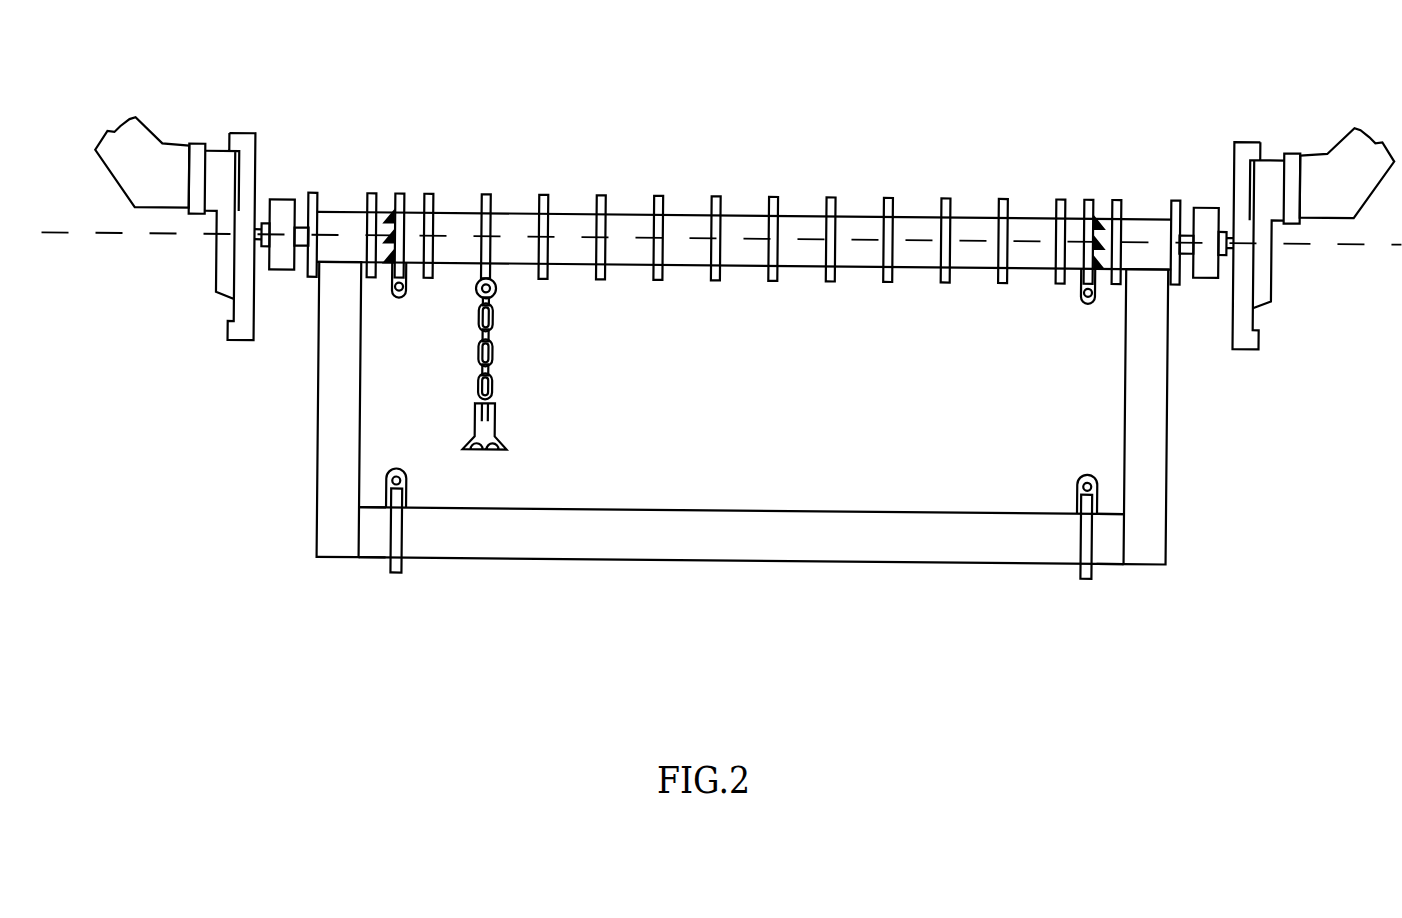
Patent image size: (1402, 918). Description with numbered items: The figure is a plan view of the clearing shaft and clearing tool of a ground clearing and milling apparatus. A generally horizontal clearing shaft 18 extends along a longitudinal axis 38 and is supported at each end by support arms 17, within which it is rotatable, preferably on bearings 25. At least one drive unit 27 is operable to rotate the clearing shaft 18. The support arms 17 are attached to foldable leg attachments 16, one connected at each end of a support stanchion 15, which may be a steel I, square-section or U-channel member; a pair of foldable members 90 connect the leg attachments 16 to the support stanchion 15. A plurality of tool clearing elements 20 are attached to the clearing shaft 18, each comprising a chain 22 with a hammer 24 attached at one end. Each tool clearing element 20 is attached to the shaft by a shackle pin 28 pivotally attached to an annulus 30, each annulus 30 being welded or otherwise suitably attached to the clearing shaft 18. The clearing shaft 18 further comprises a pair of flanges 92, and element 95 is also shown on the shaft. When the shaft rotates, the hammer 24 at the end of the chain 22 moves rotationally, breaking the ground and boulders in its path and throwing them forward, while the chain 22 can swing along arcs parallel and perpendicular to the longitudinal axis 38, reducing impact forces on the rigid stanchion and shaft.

The support stanchion 15 is at (795, 560).
The foldable leg attachment 16 is at (378, 556).
The support arm 17 is at (327, 368).
The clearing shaft 18 is at (742, 212).
The tool clearing element 20 is at (508, 352).
The chain 22 is at (479, 360).
The hammer 24 is at (497, 420).
The bearing 25 is at (348, 213).
The drive unit 27 is at (150, 133).
The shackle pin 28 is at (493, 288).
The annulus 30 is at (483, 194).
The longitudinal axis 38 is at (1330, 247).
The foldable member 90 is at (395, 573).
The flange 92 is at (1088, 202).
The latch 95 is at (393, 195).